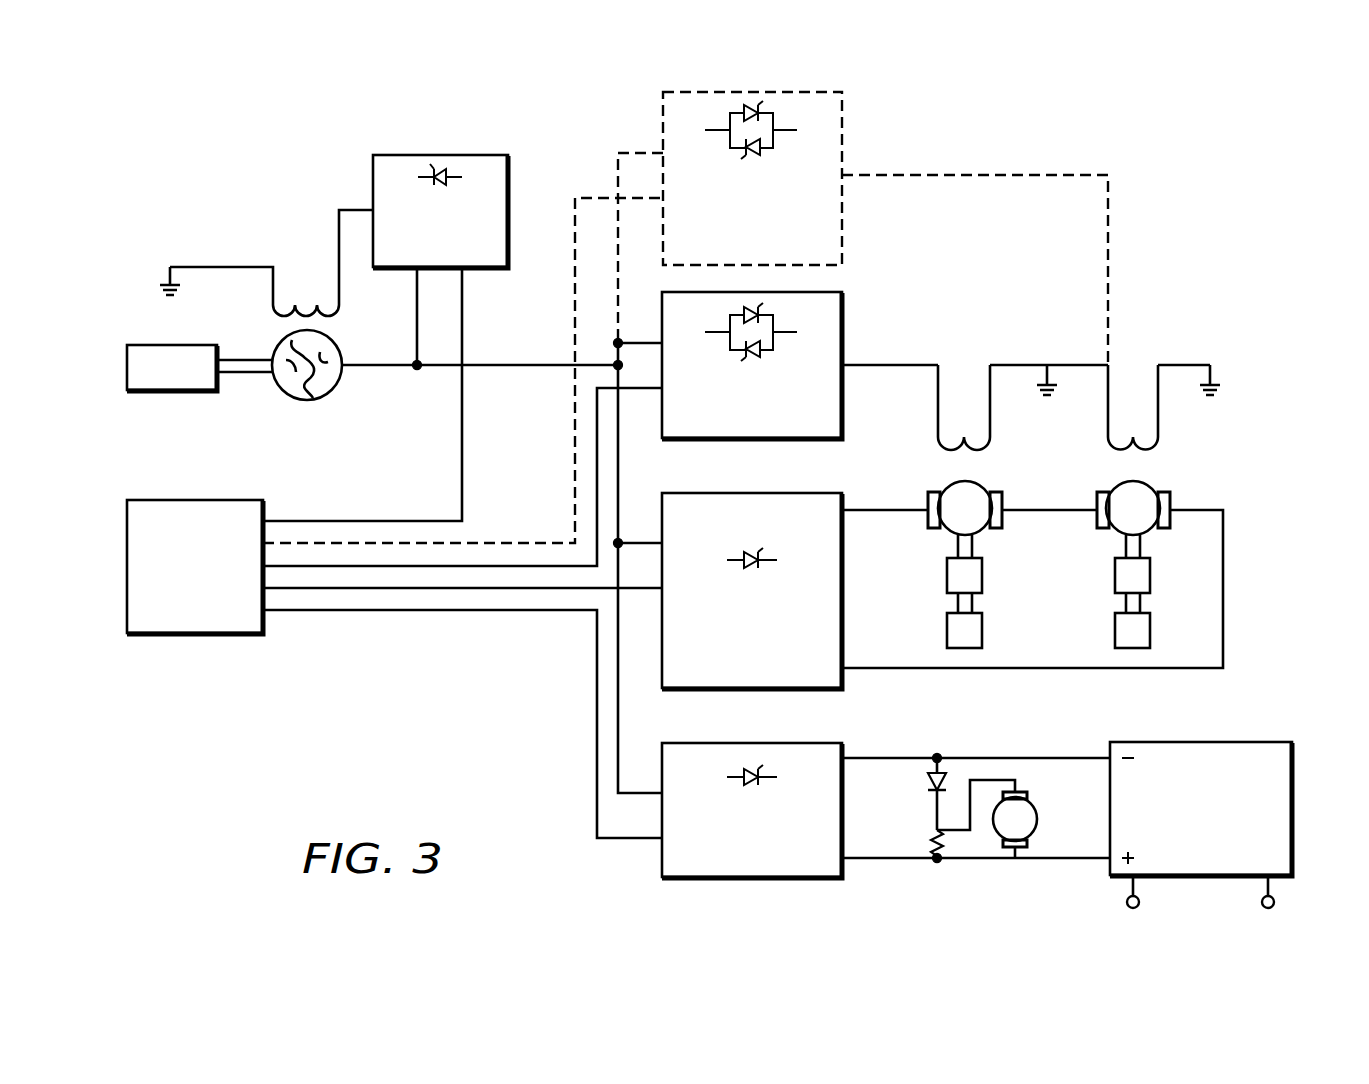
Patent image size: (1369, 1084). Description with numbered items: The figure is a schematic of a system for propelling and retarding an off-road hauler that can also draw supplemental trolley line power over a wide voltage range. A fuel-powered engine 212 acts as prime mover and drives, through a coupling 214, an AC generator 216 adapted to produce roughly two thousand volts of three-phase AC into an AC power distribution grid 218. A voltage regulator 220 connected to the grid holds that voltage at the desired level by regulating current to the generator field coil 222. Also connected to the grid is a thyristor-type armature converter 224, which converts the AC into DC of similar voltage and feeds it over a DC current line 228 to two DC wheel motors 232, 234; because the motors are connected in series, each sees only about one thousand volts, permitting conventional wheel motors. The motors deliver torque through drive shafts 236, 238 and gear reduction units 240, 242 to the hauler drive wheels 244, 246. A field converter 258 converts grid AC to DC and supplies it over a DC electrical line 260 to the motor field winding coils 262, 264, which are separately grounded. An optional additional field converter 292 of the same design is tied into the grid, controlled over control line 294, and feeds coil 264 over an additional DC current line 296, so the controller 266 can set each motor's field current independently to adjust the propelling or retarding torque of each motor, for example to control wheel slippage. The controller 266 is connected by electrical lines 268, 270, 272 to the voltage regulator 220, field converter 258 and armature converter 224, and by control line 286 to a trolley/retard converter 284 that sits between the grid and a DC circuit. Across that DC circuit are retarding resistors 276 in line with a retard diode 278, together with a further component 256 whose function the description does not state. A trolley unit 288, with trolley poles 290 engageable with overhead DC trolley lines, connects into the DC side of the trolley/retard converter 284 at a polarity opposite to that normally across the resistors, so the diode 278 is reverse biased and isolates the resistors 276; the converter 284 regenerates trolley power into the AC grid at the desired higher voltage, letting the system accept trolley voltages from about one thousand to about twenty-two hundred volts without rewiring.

The engine 212 is at (127, 366).
The coupling 214 is at (258, 360).
The AC generator 216 is at (342, 360).
The AC power distribution grid 218 is at (417, 305).
The voltage regulator 220 is at (373, 183).
The generator field coil 222 is at (315, 305).
The armature converter 224 is at (842, 548).
The DC current line 228 is at (887, 510).
The DC wheel motor 232 is at (975, 483).
The DC wheel motor 234 is at (1143, 483).
The drive shaft 236 is at (975, 546).
The drive shaft 238 is at (1143, 546).
The gear reduction unit 240 is at (947, 575).
The gear reduction unit 242 is at (1115, 575).
The hauler drive wheel 244 is at (947, 630).
The hauler drive wheel 246 is at (1115, 630).
The retard motor 256 is at (1037, 819).
The field converter 258 is at (842, 308).
The DC electrical line 260 is at (885, 365).
The field winding coil 262 is at (957, 432).
The field winding coil 264 is at (1125, 432).
The controller 266 is at (127, 568).
The electrical line 268 is at (427, 521).
The electrical line 270 is at (533, 566).
The electrical line 272 is at (428, 590).
The retarding resistors 276 is at (930, 832).
The retard diode 278 is at (928, 780).
The trolley/retard converter 284 is at (808, 877).
The control line 286 is at (515, 612).
The trolley unit 288 is at (1292, 800).
The trolley poles 290 is at (1131, 892).
The additional field converter 292 is at (842, 130).
The control line 294 is at (575, 397).
The DC current line 296 is at (982, 175).